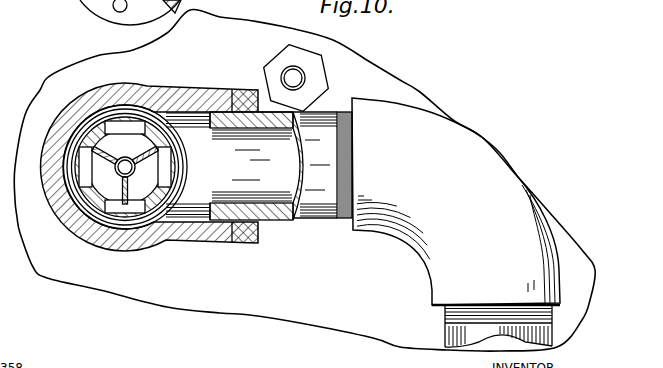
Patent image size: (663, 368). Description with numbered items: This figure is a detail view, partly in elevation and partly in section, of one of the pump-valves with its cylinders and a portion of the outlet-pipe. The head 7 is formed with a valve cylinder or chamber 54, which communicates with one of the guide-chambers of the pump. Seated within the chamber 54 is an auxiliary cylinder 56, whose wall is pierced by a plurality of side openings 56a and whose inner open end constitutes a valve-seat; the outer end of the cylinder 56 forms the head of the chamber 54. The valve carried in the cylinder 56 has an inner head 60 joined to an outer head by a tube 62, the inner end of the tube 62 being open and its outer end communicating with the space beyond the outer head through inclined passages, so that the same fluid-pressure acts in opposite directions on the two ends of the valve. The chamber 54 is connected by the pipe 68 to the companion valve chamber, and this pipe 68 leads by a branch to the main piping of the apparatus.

The head 7 is at (304, 180).
The valve cylinder or chamber 54 is at (89, 91).
The auxiliary cylinder 56 is at (136, 167).
The side openings 56a is at (169, 165).
The inner head 60 is at (125, 167).
The tube 62 is at (132, 160).
The pipe 68 is at (409, 222).